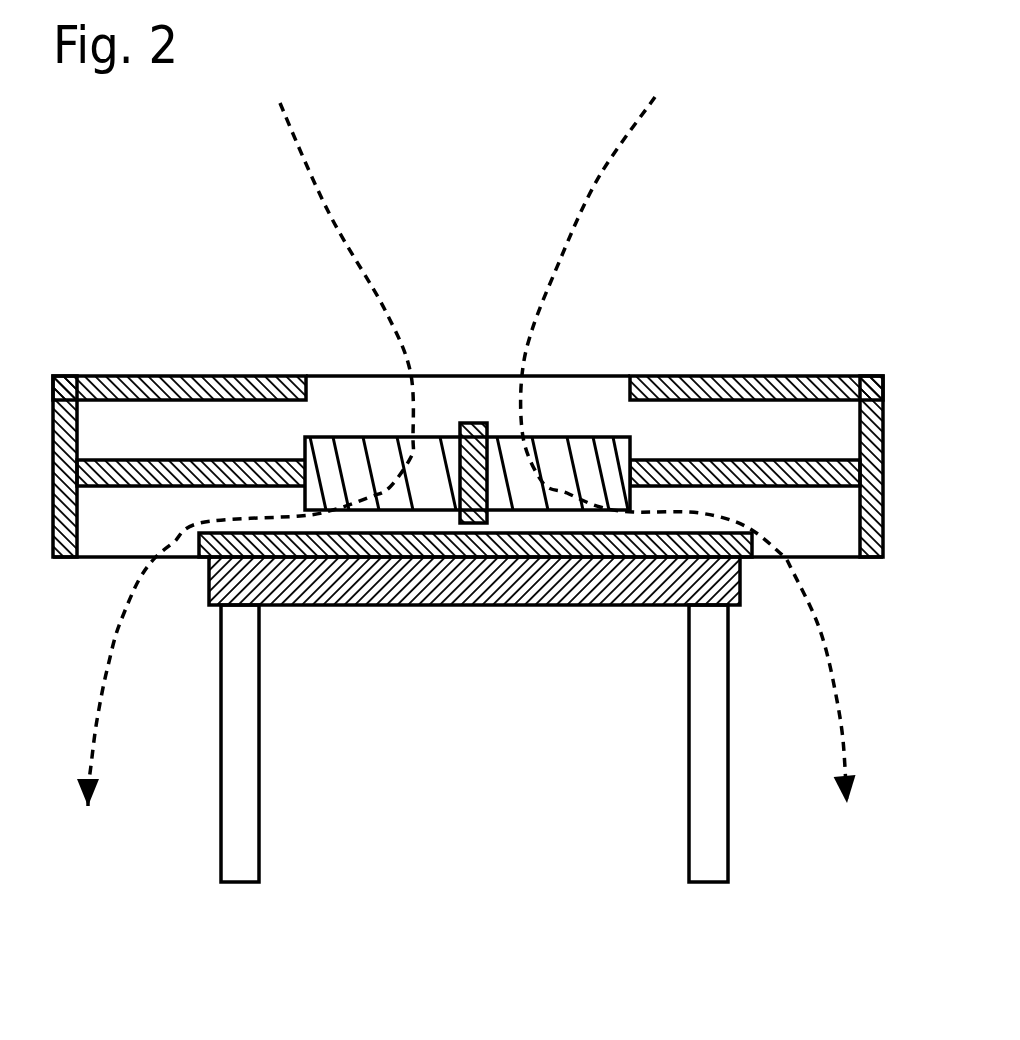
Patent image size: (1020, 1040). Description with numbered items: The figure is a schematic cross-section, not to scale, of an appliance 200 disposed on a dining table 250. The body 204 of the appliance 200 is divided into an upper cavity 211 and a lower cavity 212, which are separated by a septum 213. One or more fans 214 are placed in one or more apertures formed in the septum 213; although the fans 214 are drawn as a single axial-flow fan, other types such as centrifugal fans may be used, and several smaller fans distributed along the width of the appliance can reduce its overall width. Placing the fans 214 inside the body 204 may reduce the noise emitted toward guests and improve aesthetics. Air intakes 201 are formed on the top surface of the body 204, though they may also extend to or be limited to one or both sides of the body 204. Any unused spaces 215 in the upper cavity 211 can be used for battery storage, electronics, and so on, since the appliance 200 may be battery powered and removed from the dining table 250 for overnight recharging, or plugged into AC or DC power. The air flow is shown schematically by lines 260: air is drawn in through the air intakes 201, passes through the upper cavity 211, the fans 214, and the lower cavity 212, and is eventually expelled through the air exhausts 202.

The appliance 200 is at (138, 362).
The air intakes 201 is at (365, 375).
The air exhausts 202 is at (110, 560).
The body 204 is at (822, 376).
The upper cavity 211 is at (270, 428).
The lower cavity 212 is at (138, 525).
The septum 213 is at (653, 458).
The fans 214 is at (427, 432).
The unused spaces 215 is at (100, 440).
The dining table 250 is at (487, 613).
The air flow lines 260 is at (467, 433).